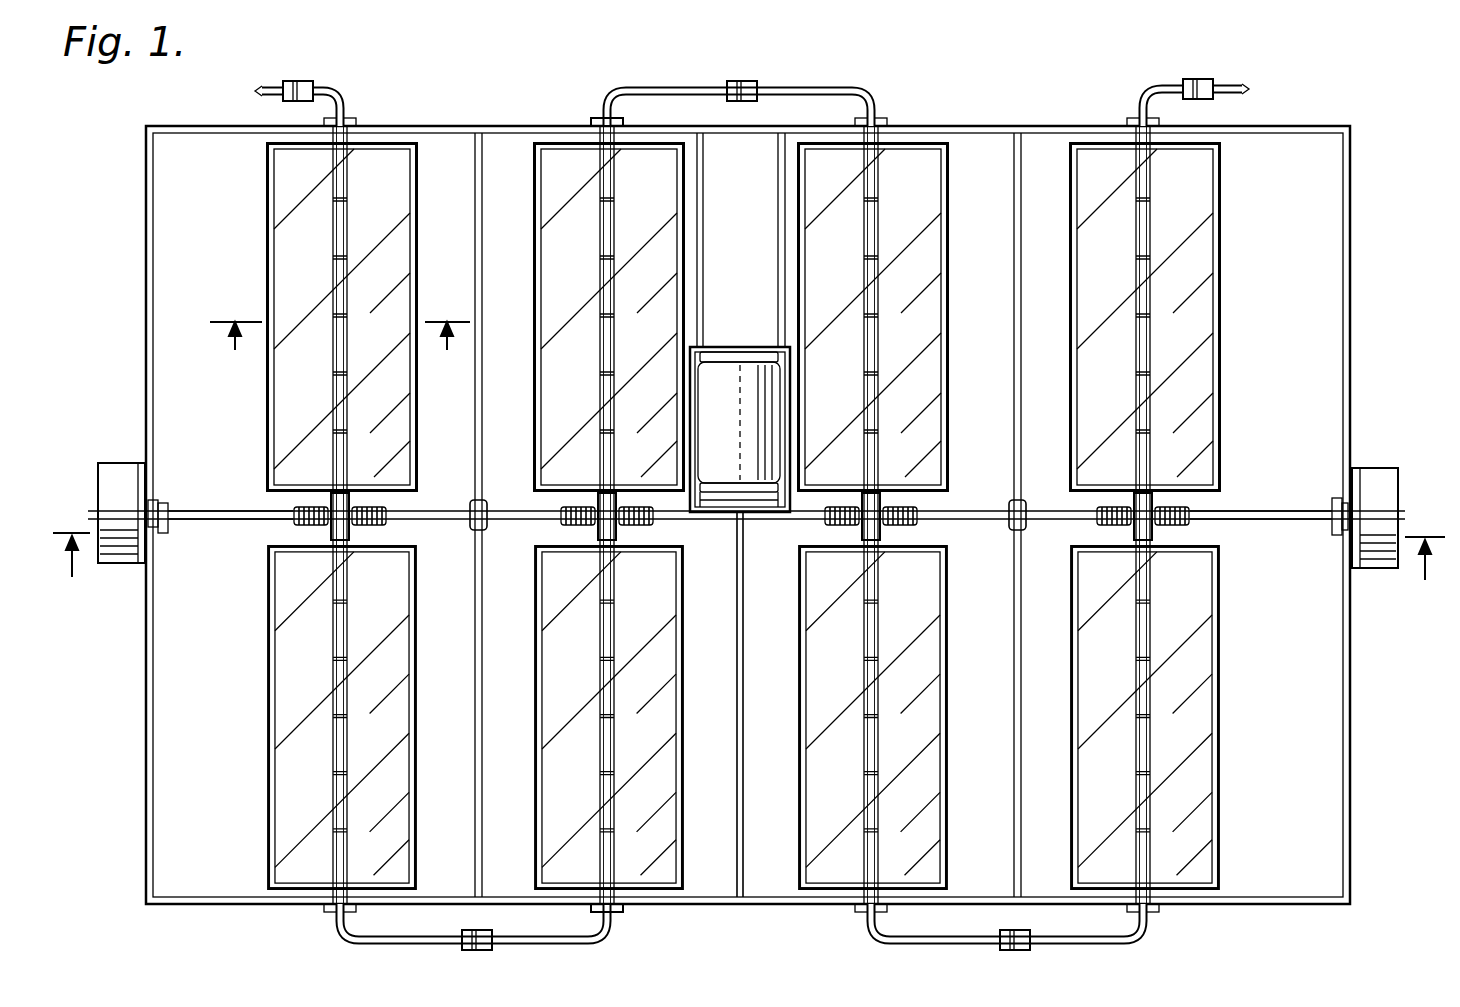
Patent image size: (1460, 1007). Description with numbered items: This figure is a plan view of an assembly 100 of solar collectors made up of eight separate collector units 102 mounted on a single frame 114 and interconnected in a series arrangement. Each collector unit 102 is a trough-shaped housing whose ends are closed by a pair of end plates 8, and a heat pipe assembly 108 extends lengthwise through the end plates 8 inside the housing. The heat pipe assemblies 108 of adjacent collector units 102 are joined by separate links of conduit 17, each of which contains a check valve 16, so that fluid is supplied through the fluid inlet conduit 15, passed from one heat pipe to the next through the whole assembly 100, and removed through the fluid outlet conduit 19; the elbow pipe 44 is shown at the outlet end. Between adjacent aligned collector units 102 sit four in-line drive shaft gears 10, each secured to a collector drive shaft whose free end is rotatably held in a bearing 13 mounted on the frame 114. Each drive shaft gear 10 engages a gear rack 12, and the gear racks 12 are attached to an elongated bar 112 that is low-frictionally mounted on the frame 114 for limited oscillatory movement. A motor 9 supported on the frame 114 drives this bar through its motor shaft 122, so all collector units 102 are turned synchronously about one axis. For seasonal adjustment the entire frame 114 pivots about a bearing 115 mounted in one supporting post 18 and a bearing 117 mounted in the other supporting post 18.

The end plate 8 is at (913, 142).
The motor 9 is at (722, 378).
The drive shaft gear 10 is at (325, 520).
The gear rack 12 is at (293, 513).
The bearing 13 is at (600, 122).
The fluid inlet conduit 15 is at (270, 86).
The check valve 16 is at (303, 84).
The conduit 17 is at (845, 92).
The supporting post 18 is at (120, 470).
The fluid outlet conduit 19 is at (1227, 84).
The outlet elbow pipe 44 is at (1130, 125).
The assembly 100 is at (1358, 166).
The collector unit 102 is at (266, 213).
The heat pipe assembly 108 is at (335, 243).
The elongated bar 112 is at (186, 512).
The frame 114 is at (1352, 290).
The bearing 115 is at (1333, 535).
The bearing 117 is at (165, 532).
The motor shaft 122 is at (742, 522).